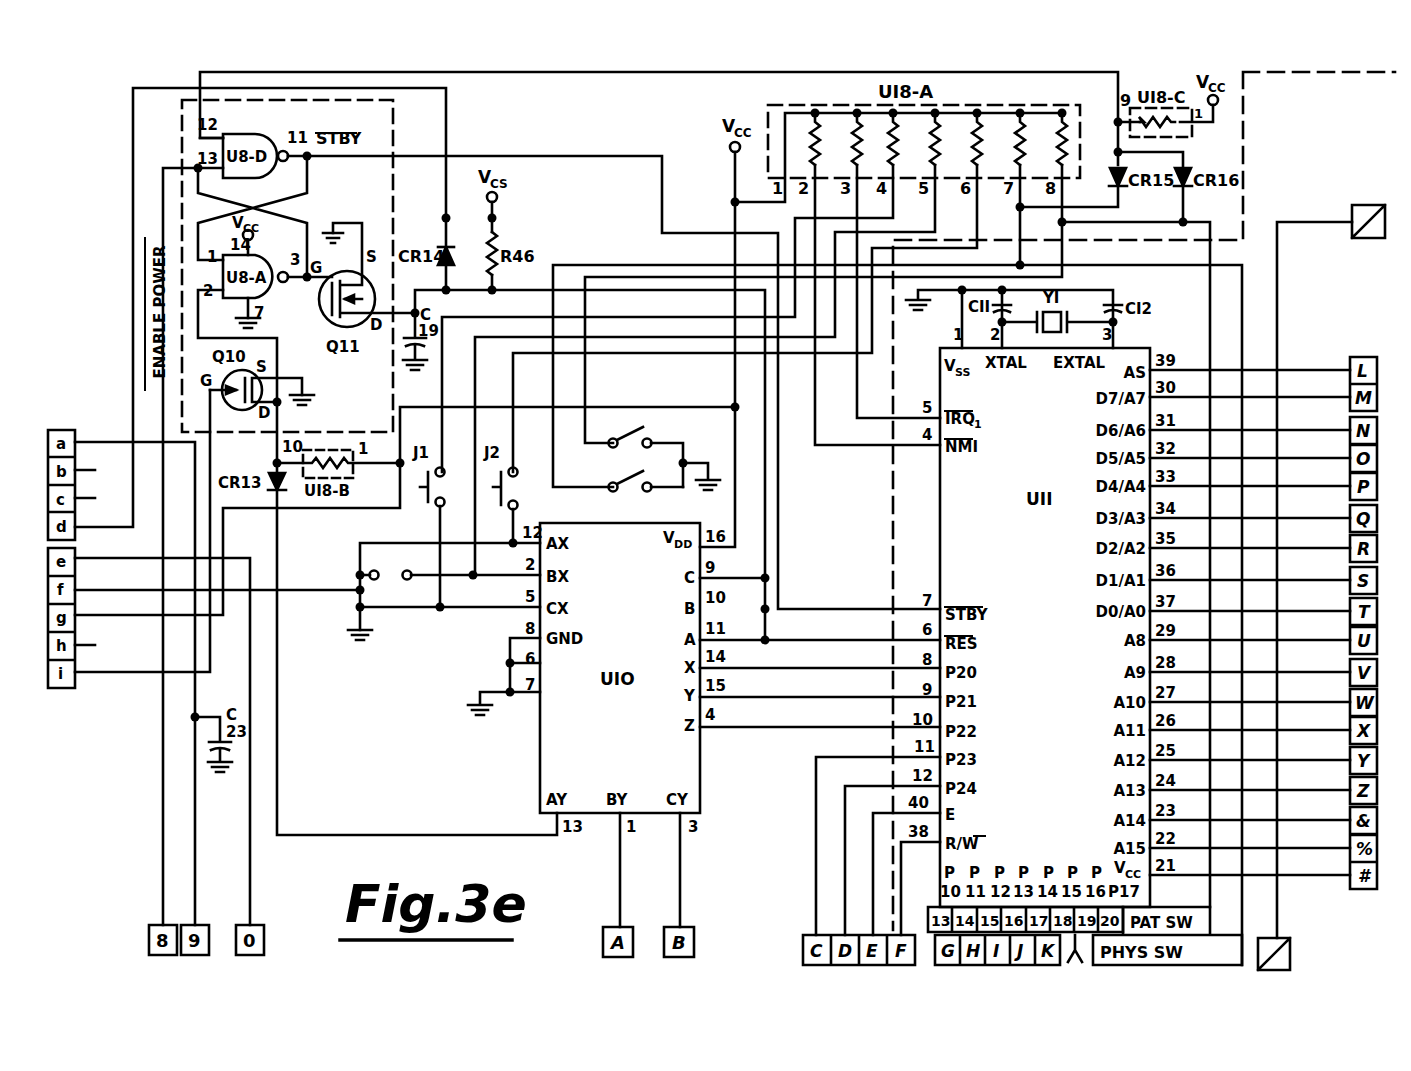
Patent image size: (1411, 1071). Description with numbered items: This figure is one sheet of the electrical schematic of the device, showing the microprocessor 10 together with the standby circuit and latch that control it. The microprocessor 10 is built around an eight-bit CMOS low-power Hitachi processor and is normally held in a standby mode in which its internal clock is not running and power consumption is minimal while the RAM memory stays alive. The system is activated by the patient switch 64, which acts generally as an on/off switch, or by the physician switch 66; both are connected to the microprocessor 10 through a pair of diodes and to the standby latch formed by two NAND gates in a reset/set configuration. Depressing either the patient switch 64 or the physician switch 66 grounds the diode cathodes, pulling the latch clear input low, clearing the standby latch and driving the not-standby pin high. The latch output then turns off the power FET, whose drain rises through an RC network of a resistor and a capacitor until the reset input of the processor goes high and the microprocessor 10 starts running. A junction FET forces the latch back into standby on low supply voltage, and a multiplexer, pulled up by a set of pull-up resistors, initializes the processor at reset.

The microprocessor 10 is at (893, 515).
The patient switch 64 is at (648, 437).
The physician switch 66 is at (628, 493).